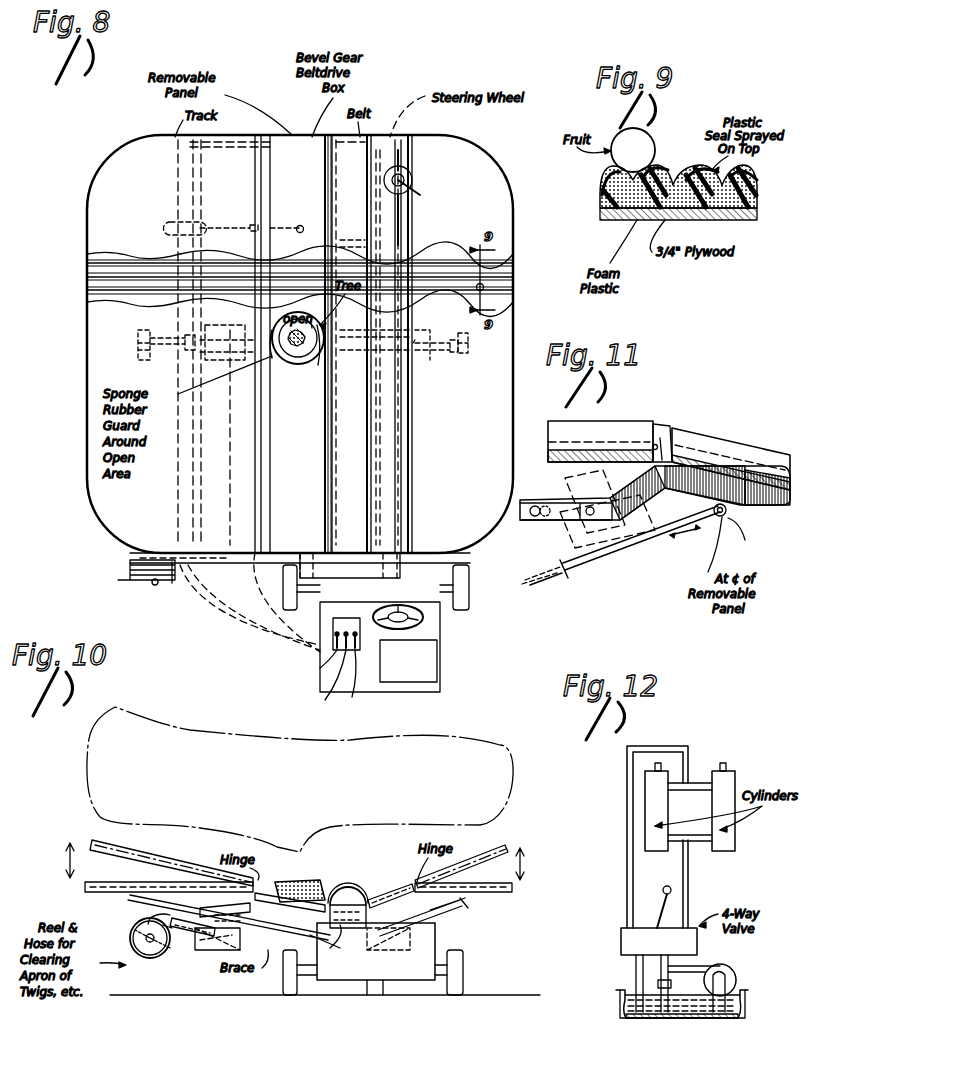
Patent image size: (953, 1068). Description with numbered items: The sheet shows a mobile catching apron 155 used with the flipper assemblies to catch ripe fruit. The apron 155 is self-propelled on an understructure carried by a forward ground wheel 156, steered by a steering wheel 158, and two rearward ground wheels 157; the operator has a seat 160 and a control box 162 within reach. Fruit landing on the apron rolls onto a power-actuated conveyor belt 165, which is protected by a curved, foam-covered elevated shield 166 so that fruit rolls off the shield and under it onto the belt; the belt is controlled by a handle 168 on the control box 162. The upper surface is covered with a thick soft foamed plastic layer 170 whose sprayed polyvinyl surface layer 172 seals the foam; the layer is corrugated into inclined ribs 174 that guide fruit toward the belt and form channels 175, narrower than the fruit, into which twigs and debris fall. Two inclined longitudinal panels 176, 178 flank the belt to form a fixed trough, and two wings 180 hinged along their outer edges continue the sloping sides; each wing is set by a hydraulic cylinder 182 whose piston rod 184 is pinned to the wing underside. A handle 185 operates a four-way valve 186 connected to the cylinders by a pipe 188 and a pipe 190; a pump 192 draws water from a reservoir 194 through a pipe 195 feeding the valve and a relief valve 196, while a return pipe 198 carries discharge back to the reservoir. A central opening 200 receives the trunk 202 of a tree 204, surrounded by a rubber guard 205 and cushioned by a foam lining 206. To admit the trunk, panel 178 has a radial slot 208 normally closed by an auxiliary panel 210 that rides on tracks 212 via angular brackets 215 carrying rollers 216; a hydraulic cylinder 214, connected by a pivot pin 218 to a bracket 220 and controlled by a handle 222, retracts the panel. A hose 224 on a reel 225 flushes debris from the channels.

In FIG. 8, the mobile catching apron 155 is at (86, 384).
In FIG. 8, the forward ground wheel 156 is at (400, 140).
In FIG. 10, the forward ground wheel 156 is at (378, 992).
In FIG. 8, the rearward ground wheels 157 is at (284, 594).
In FIG. 10, the rearward ground wheels 157 is at (463, 956).
In FIG. 8, the steering wheel 158 is at (425, 617).
In FIG. 8, the seat 160 is at (482, 658).
In FIG. 10, the seat 160 is at (425, 937).
In FIG. 8, the control box 162 is at (352, 620).
In FIG. 8, the conveyor belt 165 is at (363, 531).
In FIG. 8, the elevated shield 166 is at (366, 500).
In FIG. 10, the elevated shield 166 is at (354, 892).
In FIG. 8, the handle 168 is at (323, 684).
In FIG. 9, the foamed plastic layer 170 is at (755, 208).
In FIG. 9, the polyvinyl surface layer 172 is at (752, 172).
In FIG. 9, the ribs 174 is at (660, 172).
In FIG. 9, the channels 175 is at (710, 214).
In FIG. 8, the inclined longitudinal panel 176 is at (395, 455).
In FIG. 10, the inclined longitudinal panel 176 is at (376, 905).
In FIG. 8, the inclined longitudinal panel 178 is at (275, 554).
In FIG. 10, the inclined longitudinal panel 178 is at (270, 902).
In FIG. 11, the wings 180 is at (612, 436).
In FIG. 10, the wings 180 is at (95, 893).
In FIG. 8, the hydraulic cylinders 182 is at (178, 372).
In FIG. 12, the hydraulic cylinders 182 is at (712, 803).
In FIG. 8, the piston rod 184 is at (160, 360).
In FIG. 12, the piston rod 184 is at (660, 763).
In FIG. 8, the handle 185 is at (320, 668).
In FIG. 12, the handle 185 is at (660, 895).
In FIG. 12, the four-way valve 186 is at (670, 951).
In FIG. 12, the pipe 188 is at (692, 878).
In FIG. 12, the pipe 190 is at (627, 843).
In FIG. 12, the pump 192 is at (735, 972).
In FIG. 12, the reservoir 194 is at (742, 1004).
In FIG. 12, the pipe 195 is at (695, 966).
In FIG. 12, the relief valve 196 is at (671, 984).
In FIG. 12, the return pipe 198 is at (636, 975).
In FIG. 8, the central opening 200 is at (302, 360).
In FIG. 8, the trunk 202 is at (312, 338).
In FIG. 10, the trunk 202 is at (305, 870).
In FIG. 10, the tree 204 is at (520, 765).
In FIG. 8, the rubber guard 205 is at (316, 365).
In FIG. 10, the rubber guard 205 is at (310, 890).
In FIG. 8, the lining 206 is at (286, 362).
In FIG. 8, the radial slot 208 is at (273, 195).
In FIG. 11, the radial slot 208 is at (683, 438).
In FIG. 8, the auxiliary panel 210 is at (314, 212).
In FIG. 11, the auxiliary panel 210 is at (742, 438).
In FIG. 8, the tracks 212 is at (208, 150).
In FIG. 11, the tracks 212 is at (548, 503).
In FIG. 11, the hydraulic cylinder 214 is at (560, 522).
In FIG. 11, the angular brackets 215 is at (760, 508).
In FIG. 11, the rollers 216 is at (640, 490).
In FIG. 11, the pivot pin 218 is at (621, 545).
In FIG. 11, the bracket 220 is at (728, 514).
In FIG. 8, the handle 222 is at (359, 682).
In FIG. 8, the hose 224 is at (135, 583).
In FIG. 10, the hose 224 is at (130, 950).
In FIG. 8, the reel 225 is at (172, 582).
In FIG. 10, the reel 225 is at (172, 950).